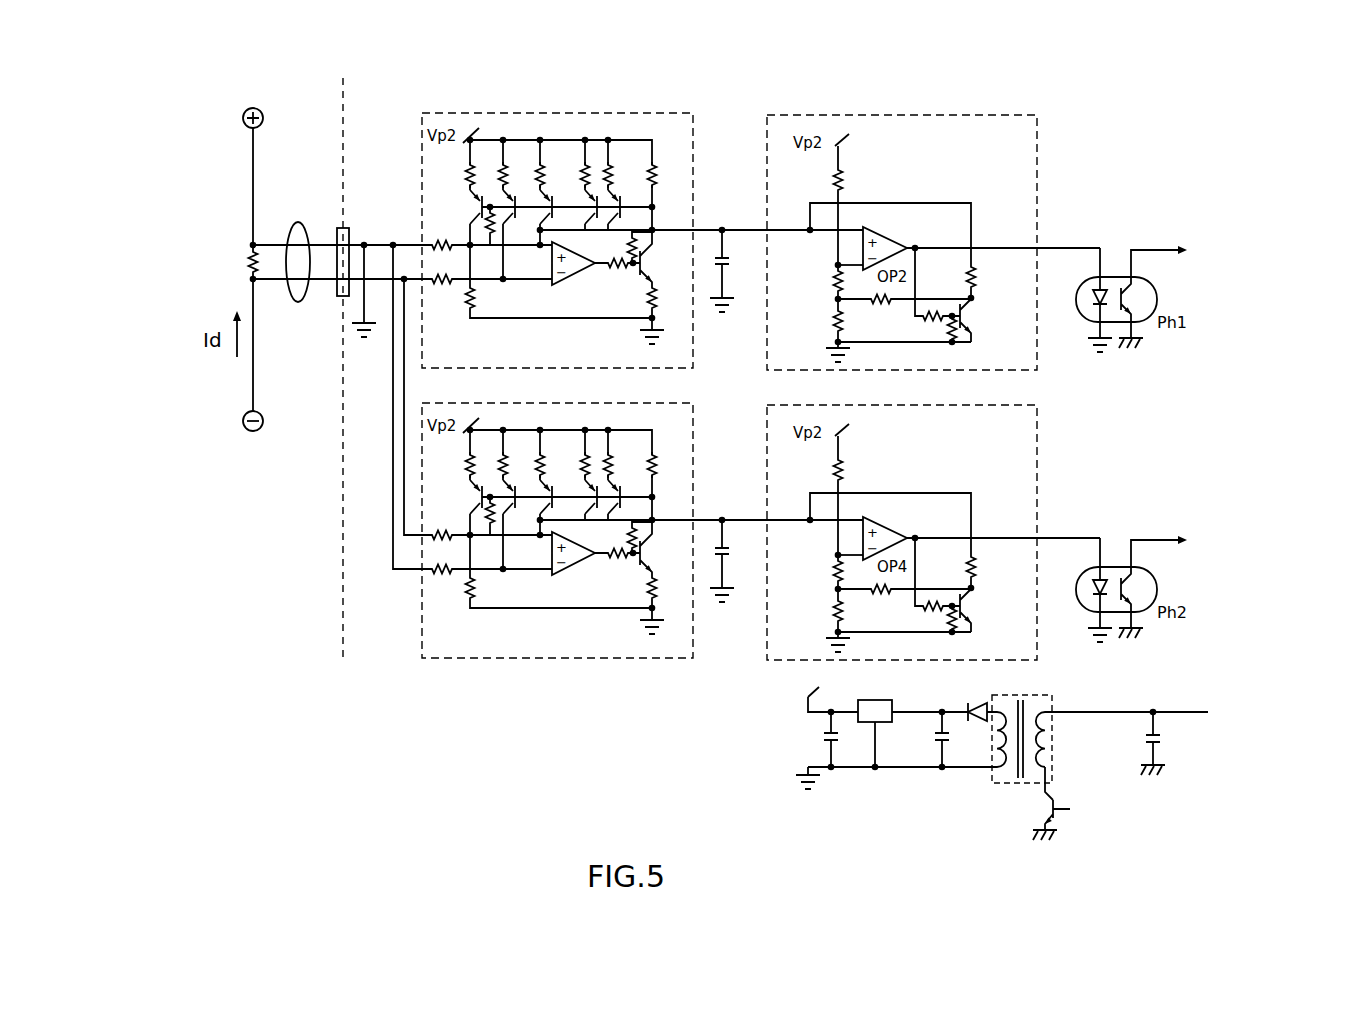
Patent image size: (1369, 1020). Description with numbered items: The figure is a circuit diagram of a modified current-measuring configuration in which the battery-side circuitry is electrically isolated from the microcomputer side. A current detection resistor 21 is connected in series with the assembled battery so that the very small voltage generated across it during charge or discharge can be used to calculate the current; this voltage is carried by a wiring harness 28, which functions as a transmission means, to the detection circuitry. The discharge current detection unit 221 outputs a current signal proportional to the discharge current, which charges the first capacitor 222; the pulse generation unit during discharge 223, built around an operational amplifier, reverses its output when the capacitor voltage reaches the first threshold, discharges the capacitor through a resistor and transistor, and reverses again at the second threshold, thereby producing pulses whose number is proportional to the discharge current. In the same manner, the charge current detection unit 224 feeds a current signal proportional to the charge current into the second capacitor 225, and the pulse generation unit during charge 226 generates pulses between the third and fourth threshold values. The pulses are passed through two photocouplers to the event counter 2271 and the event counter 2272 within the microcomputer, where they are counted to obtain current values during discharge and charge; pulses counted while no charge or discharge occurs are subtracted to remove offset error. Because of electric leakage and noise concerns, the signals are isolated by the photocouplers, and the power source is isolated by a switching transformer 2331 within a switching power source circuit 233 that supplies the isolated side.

The current detection resistor 21 is at (243, 264).
The wiring harness 28 is at (298, 222).
The discharge current detection unit 221 is at (617, 112).
The first capacitor 222 is at (735, 265).
The pulse generation unit during discharge 223 is at (965, 114).
The charge current detection unit 224 is at (613, 658).
The second capacitor 225 is at (735, 555).
The pulse generation unit during charge 226 is at (1037, 462).
The event counter 2271 is at (1247, 247).
The event counter 2272 is at (1247, 537).
The switching power source circuit 233 is at (1001, 754).
The switching transformer 2331 is at (1037, 683).